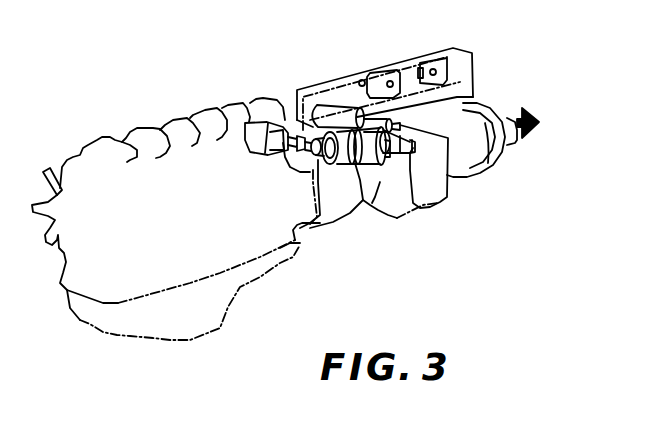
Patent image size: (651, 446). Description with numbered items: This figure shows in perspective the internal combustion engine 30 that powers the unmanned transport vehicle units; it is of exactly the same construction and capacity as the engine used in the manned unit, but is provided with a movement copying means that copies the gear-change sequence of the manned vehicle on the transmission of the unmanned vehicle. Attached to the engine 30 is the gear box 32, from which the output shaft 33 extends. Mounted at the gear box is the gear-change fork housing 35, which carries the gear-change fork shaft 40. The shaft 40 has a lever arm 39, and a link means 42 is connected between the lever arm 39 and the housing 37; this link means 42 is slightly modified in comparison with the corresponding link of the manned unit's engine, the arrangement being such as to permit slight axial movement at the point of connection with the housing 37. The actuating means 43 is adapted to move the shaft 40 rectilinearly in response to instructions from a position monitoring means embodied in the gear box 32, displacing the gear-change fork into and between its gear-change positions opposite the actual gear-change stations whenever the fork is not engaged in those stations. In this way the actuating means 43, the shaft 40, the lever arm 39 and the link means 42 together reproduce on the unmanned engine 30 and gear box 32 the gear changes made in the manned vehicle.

The internal combustion engine 30 is at (147, 253).
The gear box 32 is at (398, 206).
The output shaft 33 is at (530, 132).
The gear-change fork housing 35 is at (376, 118).
The housing 37 is at (260, 133).
The lever arm 39 is at (400, 158).
The gear-change fork shaft 40 is at (420, 133).
The link means 42 is at (353, 163).
The actuating means 43 is at (340, 110).